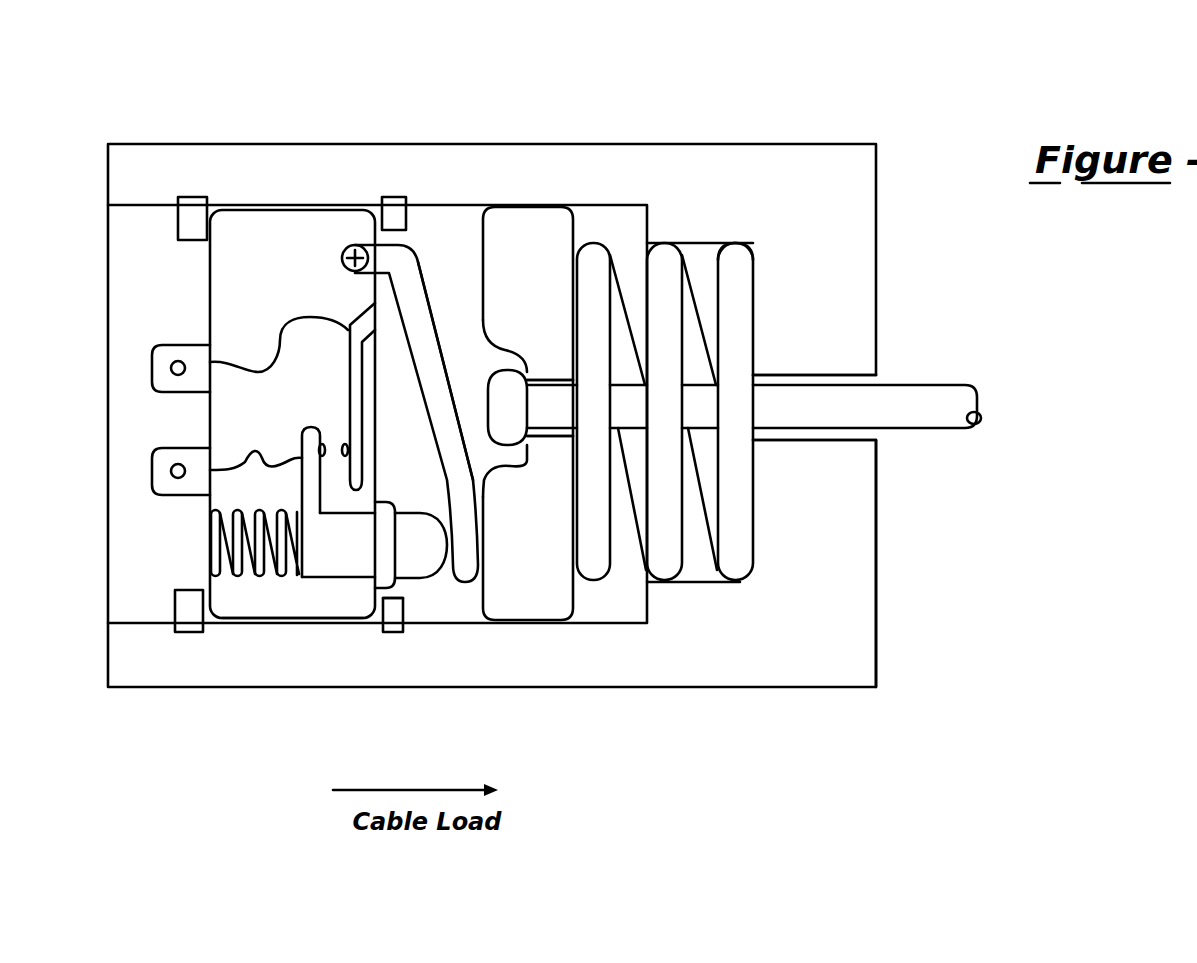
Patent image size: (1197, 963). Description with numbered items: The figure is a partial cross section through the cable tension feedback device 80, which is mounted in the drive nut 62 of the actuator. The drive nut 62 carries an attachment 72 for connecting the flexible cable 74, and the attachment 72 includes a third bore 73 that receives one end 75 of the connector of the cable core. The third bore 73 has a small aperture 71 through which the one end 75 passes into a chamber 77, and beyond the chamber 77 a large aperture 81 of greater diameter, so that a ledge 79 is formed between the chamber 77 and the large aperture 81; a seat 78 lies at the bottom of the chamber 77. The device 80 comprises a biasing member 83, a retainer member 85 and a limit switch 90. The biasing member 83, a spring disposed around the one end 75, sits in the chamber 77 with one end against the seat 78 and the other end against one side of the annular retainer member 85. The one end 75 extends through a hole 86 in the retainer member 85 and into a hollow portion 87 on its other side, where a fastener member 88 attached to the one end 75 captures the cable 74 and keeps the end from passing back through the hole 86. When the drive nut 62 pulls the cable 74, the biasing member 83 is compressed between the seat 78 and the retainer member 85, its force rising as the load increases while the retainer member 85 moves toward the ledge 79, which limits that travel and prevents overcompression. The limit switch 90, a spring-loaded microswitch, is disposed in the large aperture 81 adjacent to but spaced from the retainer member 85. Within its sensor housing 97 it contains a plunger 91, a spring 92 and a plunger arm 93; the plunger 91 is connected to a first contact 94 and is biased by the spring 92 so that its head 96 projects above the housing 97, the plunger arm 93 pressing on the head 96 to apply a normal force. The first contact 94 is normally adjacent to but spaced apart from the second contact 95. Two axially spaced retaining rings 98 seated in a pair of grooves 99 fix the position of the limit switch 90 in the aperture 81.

The drive nut 62 is at (862, 656).
The small aperture 71 is at (844, 376).
The attachment 72 is at (850, 143).
The third bore 73 is at (430, 625).
The flexible cable 74 is at (926, 378).
The one end 75 is at (553, 432).
The chamber 77 is at (700, 584).
The seat 78 is at (755, 265).
The ledge 79 is at (662, 208).
The cable tension feedback device 80 is at (890, 740).
The large aperture 81 is at (445, 300).
The biasing member 83 is at (740, 490).
The retainer member 85 is at (530, 198).
The hole 86 is at (551, 391).
The hollow portion 87 is at (488, 472).
The fastener member 88 is at (507, 370).
The limit switch 90 is at (279, 103).
The plunger 91 is at (364, 620).
The spring 92 is at (258, 580).
The plunger arm 93 is at (442, 320).
The first contact 94 is at (300, 428).
The second contact 95 is at (368, 414).
The head 96 is at (165, 345).
The sensor housing 97 is at (333, 622).
The retaining rings 98 is at (160, 206).
The grooves 99 is at (205, 205).